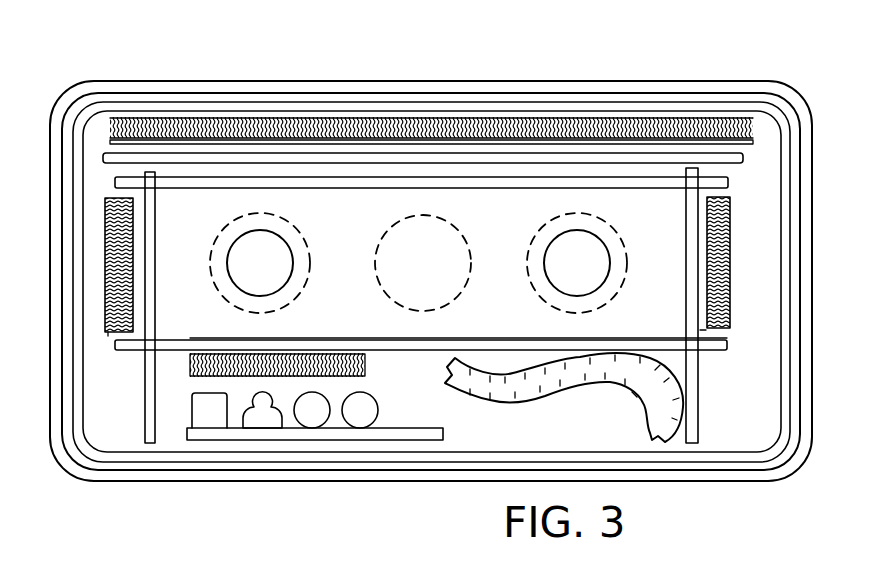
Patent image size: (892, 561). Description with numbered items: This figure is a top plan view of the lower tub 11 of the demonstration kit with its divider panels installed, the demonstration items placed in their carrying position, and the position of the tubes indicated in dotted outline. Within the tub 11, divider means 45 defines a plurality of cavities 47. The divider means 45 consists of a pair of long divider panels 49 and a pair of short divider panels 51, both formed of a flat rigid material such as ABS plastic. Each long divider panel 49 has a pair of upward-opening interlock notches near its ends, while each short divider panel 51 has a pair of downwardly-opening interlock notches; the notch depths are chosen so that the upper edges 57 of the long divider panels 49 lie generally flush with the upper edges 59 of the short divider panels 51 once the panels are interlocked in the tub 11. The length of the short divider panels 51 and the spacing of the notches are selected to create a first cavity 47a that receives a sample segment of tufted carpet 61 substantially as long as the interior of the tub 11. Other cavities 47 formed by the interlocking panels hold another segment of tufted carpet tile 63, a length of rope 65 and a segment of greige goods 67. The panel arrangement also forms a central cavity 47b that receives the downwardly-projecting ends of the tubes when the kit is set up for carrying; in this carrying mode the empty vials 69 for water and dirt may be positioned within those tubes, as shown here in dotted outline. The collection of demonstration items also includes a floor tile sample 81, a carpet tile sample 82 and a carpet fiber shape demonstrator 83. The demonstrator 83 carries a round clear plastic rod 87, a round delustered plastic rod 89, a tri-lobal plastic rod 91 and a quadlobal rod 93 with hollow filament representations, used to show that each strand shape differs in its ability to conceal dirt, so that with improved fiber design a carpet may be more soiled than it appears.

The tub 11 is at (432, 75).
The cavities 47 is at (97, 138).
The first cavity 47a is at (764, 125).
The central cavity 47b is at (660, 323).
The sample segment of tufted carpet 61 is at (543, 118).
The floor tile sample 81 is at (740, 163).
The long divider panels 49 is at (245, 190).
The upper edges of the long divider panels 57 is at (410, 338).
The short divider panels 51 is at (157, 287).
The upper edges of the short divider panels 59 is at (150, 221).
The carpet tile sample 82 is at (729, 290).
The divider means 45 is at (676, 203).
The empty vials 69 is at (296, 245).
The segment of tufted carpet tile 63 is at (108, 331).
The segment of greige goods 67 is at (367, 368).
The carpet fiber shape demonstrator 83 is at (390, 428).
The quadlobal rod 93 is at (208, 417).
The tri-lobal plastic rod 91 is at (262, 418).
The round delustered plastic rod 89 is at (312, 412).
The round clear plastic rod 87 is at (363, 415).
The length of rope 65 is at (517, 395).